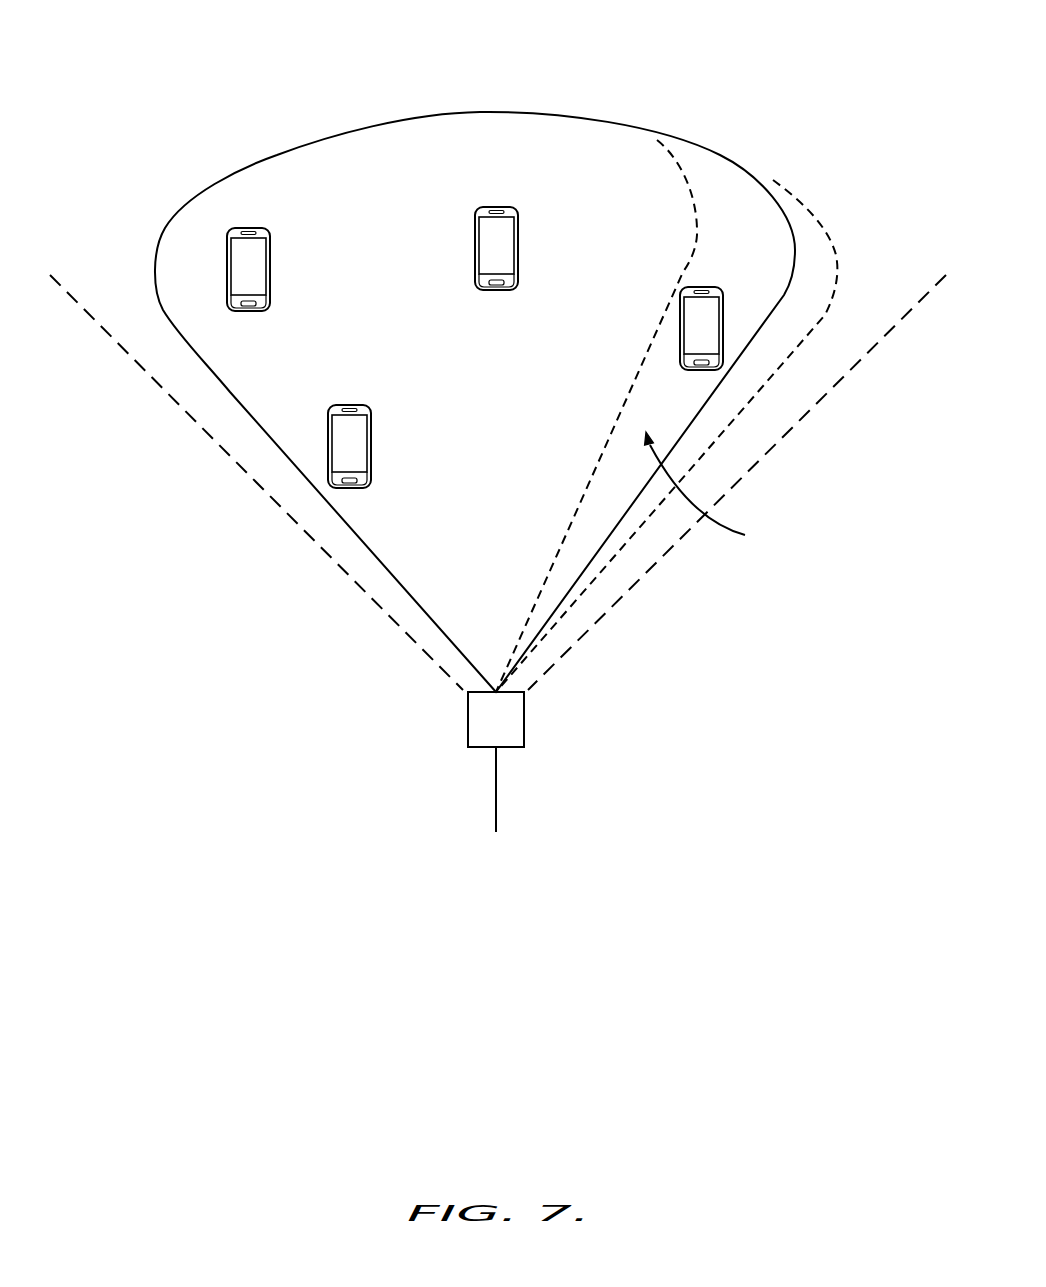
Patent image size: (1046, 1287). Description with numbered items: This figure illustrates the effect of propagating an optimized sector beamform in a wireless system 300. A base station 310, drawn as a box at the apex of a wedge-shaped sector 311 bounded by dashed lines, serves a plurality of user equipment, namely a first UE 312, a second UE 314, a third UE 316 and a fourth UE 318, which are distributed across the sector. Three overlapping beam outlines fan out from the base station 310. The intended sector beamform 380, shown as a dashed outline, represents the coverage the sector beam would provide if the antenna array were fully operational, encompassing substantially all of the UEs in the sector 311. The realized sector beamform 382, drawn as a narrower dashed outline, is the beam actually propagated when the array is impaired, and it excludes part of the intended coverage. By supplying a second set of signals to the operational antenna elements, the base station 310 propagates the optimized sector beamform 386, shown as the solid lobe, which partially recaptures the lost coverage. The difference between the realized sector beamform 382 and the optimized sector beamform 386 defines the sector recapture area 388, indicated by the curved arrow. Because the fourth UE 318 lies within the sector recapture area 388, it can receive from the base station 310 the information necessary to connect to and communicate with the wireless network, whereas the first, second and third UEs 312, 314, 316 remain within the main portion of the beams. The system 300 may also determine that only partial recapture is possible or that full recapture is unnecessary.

The system 300 is at (852, 774).
The base station 310 is at (512, 780).
The sector 311 is at (948, 88).
The first UE 312 is at (250, 313).
The second UE 314 is at (350, 490).
The third UE 316 is at (497, 292).
The fourth UE 318 is at (703, 372).
The intended sector beamform 380 is at (838, 275).
The realized sector beamform 382 is at (696, 183).
The optimized sector beamform 386 is at (275, 156).
The sector recapture area 388 is at (720, 490).